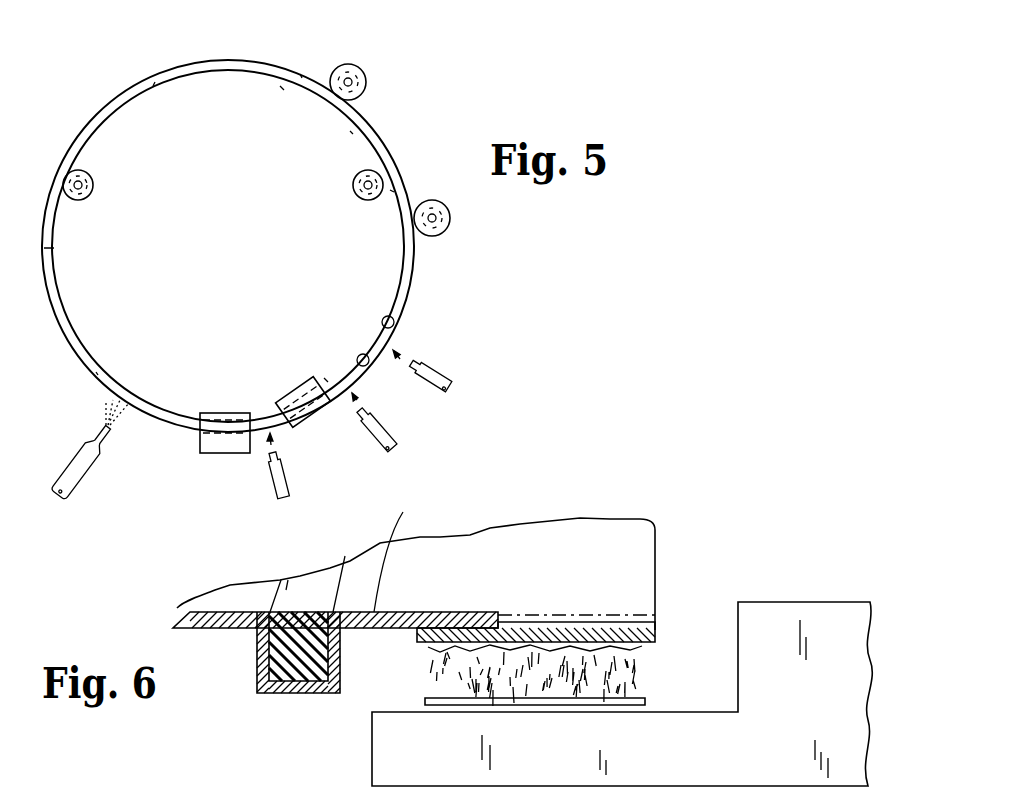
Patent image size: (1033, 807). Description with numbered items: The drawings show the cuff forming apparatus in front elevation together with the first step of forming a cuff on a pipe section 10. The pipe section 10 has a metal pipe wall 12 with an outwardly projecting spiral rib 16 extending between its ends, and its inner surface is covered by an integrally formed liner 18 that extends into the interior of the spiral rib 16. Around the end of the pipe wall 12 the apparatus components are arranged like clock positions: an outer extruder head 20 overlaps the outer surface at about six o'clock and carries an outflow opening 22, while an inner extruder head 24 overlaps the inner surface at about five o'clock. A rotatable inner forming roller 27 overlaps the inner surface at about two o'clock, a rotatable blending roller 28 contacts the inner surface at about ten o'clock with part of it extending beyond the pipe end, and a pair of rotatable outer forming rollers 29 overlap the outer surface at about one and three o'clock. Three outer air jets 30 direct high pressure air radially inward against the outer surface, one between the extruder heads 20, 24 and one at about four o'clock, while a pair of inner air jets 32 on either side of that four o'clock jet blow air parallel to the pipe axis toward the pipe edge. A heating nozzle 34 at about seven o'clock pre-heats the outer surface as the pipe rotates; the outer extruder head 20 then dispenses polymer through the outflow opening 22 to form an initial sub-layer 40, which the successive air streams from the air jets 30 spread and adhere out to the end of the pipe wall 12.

In FIG. 5, the pipe section 10 is at (396, 117).
In FIG. 6, the pipe section 10 is at (557, 517).
In FIG. 6, the pipe wall 12 is at (213, 630).
In FIG. 5, the spiral rib 16 is at (277, 64).
In FIG. 6, the spiral rib 16 is at (283, 700).
In FIG. 6, the liner 18 is at (407, 548).
In FIG. 5, the outer extruder head 20 is at (222, 413).
In FIG. 6, the outer extruder head 20 is at (812, 612).
In FIG. 6, the outflow opening 22 is at (595, 700).
In FIG. 5, the inner extruder head 24 is at (302, 387).
In FIG. 5, the inner forming roller 27 is at (360, 200).
In FIG. 5, the blending roller 28 is at (94, 183).
In FIG. 5, the outer forming rollers 29 is at (357, 68).
In FIG. 5, the outer air jets 30 is at (450, 368).
In FIG. 5, the inner air jets 32 is at (395, 318).
In FIG. 5, the heating nozzle 34 is at (82, 472).
In FIG. 6, the initial sub-layer 40 is at (655, 632).